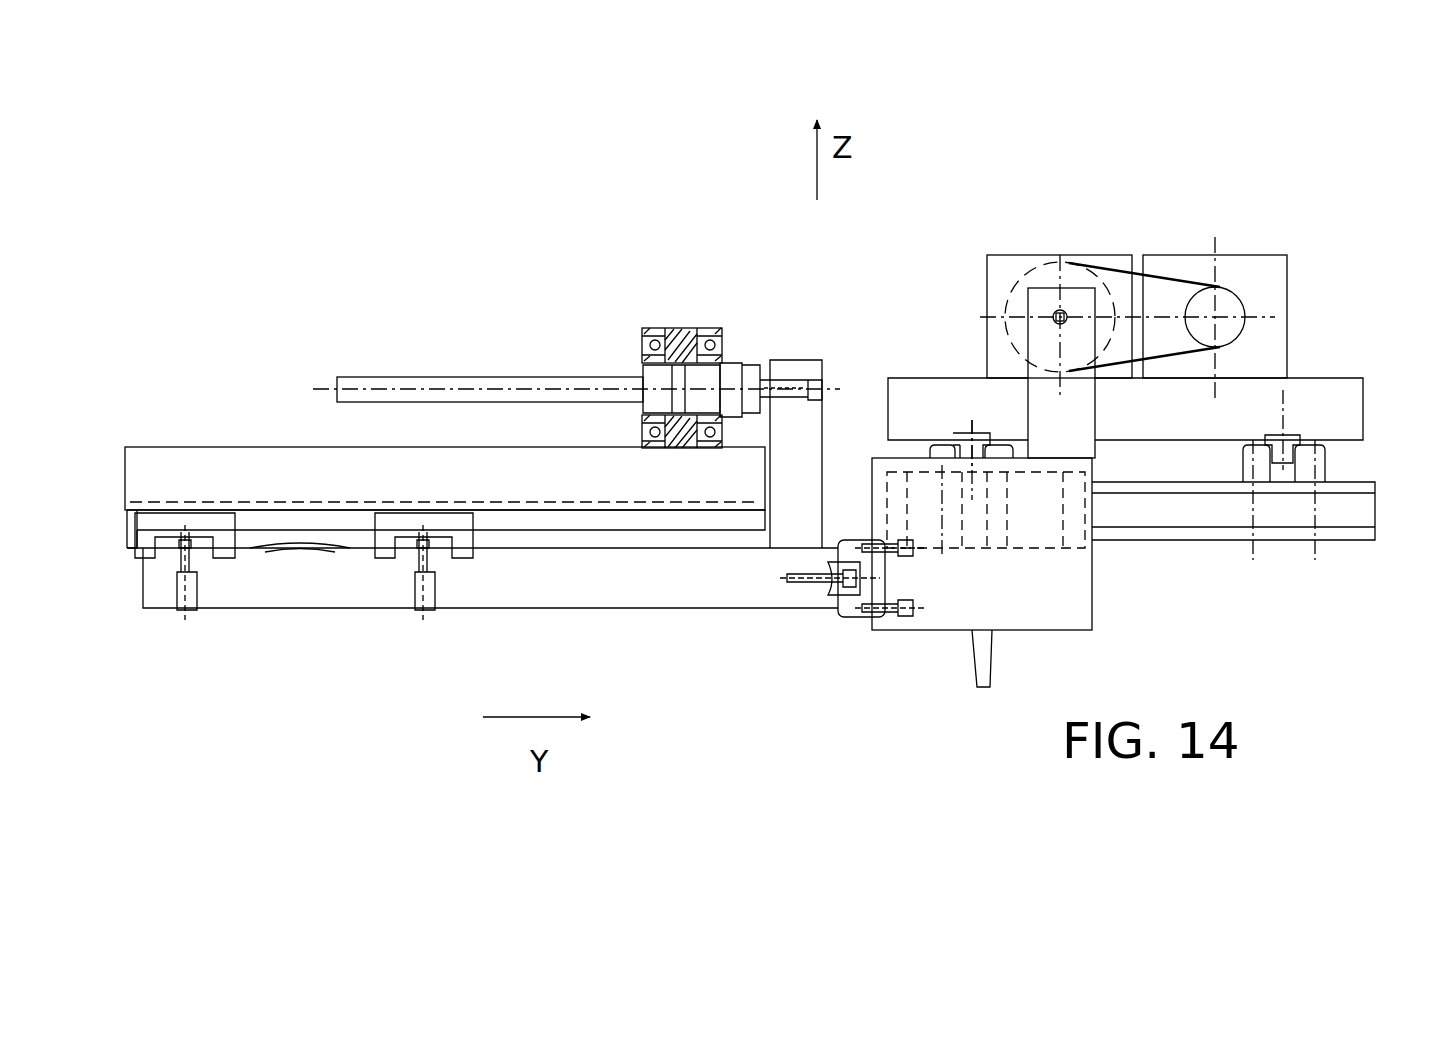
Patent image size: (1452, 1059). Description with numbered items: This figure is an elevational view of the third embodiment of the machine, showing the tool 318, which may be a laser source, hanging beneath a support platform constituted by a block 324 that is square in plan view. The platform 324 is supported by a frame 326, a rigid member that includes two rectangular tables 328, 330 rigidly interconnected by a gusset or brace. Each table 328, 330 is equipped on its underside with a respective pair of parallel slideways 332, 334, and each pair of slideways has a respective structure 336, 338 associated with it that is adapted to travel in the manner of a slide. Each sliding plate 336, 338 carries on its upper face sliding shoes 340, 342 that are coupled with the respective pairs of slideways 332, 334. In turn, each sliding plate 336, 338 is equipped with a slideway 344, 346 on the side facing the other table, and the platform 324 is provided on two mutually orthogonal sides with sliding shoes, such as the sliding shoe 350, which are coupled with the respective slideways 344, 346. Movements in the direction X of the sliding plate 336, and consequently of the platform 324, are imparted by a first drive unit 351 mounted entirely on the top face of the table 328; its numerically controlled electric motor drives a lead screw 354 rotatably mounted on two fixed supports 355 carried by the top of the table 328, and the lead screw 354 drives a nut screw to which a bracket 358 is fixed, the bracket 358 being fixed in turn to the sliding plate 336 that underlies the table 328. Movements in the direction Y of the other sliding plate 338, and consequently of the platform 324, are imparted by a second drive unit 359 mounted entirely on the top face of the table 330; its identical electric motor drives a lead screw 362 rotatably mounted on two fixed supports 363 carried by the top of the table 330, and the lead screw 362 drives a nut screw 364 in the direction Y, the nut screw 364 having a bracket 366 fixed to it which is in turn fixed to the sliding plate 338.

The tool 318 is at (980, 653).
The block 324 is at (1073, 592).
The frame 326 is at (352, 654).
The rectangular table 328 is at (1325, 393).
The rectangular table 330 is at (215, 472).
The pair of parallel slideways 332 is at (962, 433).
The pair of parallel slideways 334 is at (655, 520).
The sliding plate 336 is at (1233, 555).
The sliding plate 338 is at (240, 612).
The sliding shoes 340 is at (940, 445).
The sliding shoes 342 is at (462, 545).
The slideway 344 is at (1350, 505).
The slideway 346 is at (832, 593).
The sliding shoe 350 is at (852, 614).
The first drive unit 351 is at (1179, 230).
The lead screw 354 is at (1070, 287).
The fixed supports 355 is at (1008, 270).
The bracket 358 is at (1040, 335).
The second drive unit 359 is at (566, 352).
The lead screw 362 is at (417, 386).
The fixed supports 363 is at (663, 325).
The nut screw 364 is at (738, 375).
The bracket 366 is at (802, 377).